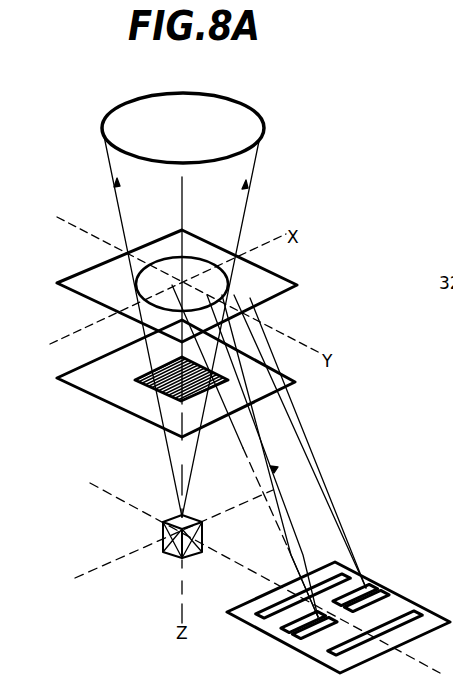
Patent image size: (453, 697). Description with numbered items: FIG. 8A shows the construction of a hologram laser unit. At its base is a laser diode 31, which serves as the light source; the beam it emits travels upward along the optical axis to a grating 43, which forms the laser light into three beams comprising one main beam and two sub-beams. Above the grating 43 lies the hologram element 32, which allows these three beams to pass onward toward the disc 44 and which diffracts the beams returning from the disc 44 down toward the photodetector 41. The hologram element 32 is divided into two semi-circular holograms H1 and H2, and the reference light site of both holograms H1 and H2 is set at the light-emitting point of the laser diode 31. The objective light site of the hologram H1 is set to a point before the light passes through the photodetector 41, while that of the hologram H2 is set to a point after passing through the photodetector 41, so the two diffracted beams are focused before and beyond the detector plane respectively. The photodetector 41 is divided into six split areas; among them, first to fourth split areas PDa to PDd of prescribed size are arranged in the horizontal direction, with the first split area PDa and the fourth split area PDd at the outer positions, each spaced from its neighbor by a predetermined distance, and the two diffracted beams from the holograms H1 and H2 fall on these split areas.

The disc 44 is at (248, 127).
The hologram element 32 is at (223, 288).
The hologram H1 is at (168, 268).
The hologram H2 is at (134, 290).
The grating 43 is at (148, 382).
The laser diode 31 is at (163, 532).
The photodetector divided-by-six 41 is at (338, 594).
The first split area PDa is at (302, 633).
The fourth split area PDd is at (386, 599).